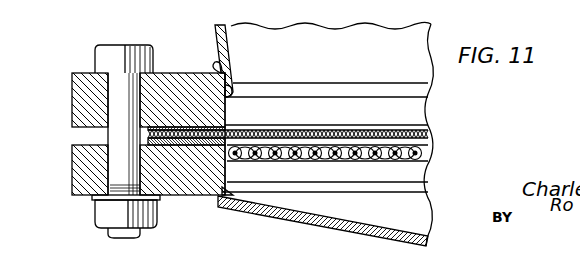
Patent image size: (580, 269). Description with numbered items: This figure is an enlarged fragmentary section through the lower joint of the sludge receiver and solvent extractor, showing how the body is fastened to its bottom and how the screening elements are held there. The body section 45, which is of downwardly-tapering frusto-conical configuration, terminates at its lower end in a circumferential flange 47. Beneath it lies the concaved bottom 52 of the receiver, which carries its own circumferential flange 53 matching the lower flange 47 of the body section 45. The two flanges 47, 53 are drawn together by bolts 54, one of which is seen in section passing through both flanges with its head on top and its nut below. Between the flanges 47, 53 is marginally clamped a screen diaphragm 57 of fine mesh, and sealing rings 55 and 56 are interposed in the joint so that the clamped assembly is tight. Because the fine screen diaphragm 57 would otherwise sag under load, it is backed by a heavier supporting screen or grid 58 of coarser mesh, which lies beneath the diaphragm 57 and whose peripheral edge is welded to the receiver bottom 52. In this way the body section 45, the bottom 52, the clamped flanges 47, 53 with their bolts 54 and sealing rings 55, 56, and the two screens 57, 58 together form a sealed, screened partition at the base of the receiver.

The body section 45 is at (323, 134).
The lower circumferential flange 47 is at (78, 99).
The concaved bottom 52 is at (326, 226).
The circumferential flange 53 is at (82, 170).
The bolt 54 is at (115, 52).
The sealing ring 55 is at (187, 127).
The sealing ring 56 is at (191, 146).
The screen diaphragm 57 is at (267, 130).
The supporting screen or grid 58 is at (290, 162).